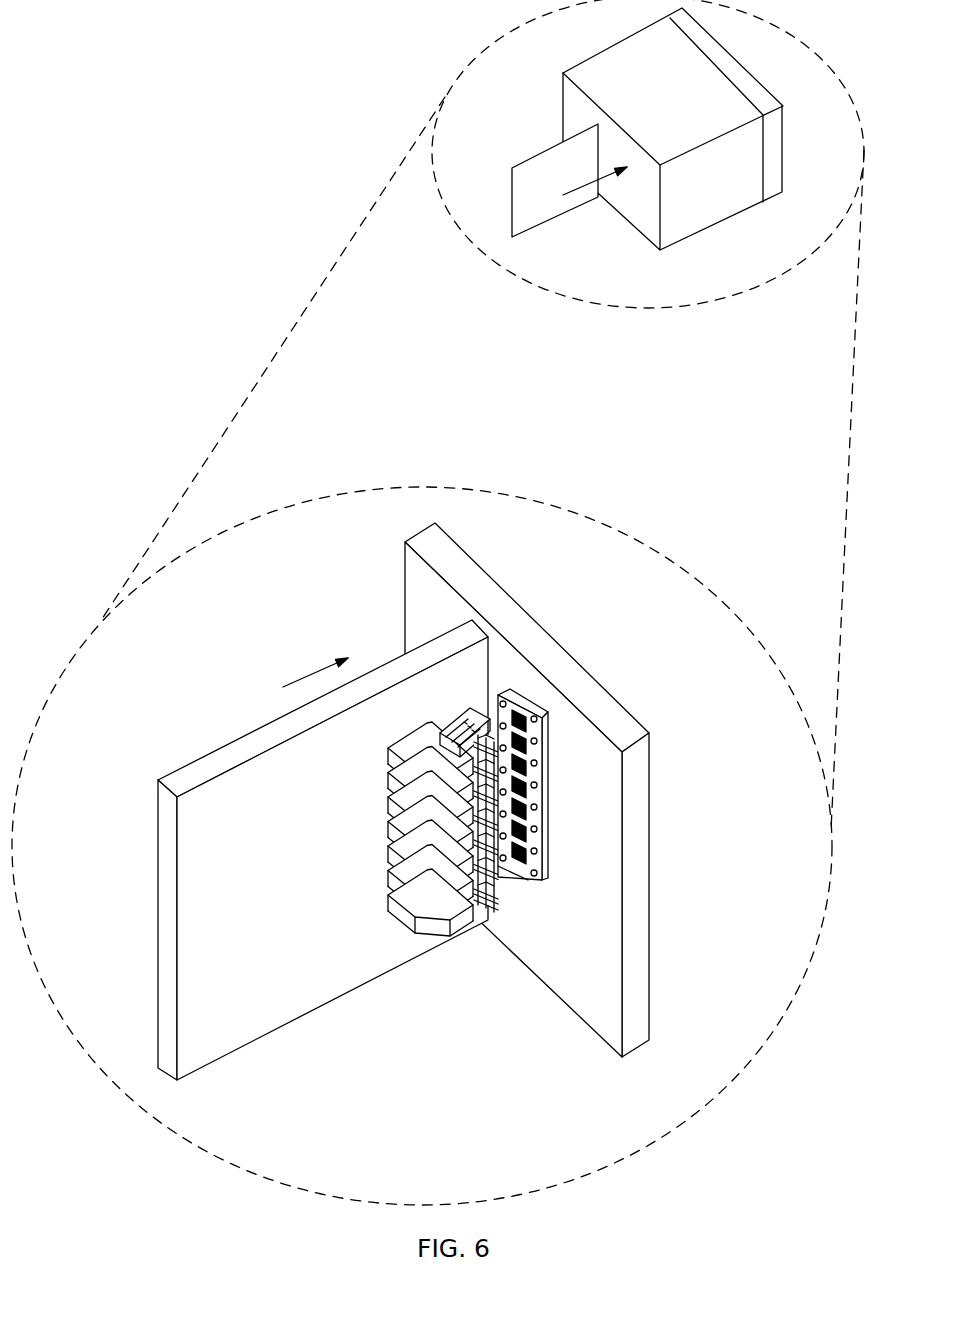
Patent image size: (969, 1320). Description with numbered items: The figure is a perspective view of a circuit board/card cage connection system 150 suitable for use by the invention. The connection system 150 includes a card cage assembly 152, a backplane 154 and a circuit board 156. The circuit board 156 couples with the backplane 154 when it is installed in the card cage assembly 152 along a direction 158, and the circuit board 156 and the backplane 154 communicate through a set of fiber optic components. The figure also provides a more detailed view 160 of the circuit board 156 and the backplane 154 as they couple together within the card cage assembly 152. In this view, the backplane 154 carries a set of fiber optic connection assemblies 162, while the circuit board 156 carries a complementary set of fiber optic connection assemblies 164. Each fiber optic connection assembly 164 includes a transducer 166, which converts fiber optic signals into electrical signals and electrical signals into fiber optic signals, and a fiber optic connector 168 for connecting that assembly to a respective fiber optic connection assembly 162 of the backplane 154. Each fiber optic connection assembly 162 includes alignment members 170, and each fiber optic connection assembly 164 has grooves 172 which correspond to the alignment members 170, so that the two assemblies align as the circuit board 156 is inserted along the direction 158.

The circuit board/card cage connection system 150 is at (743, 292).
The card cage assembly 152 is at (707, 230).
The backplane 154 is at (785, 182).
The circuit board 156 is at (512, 200).
The direction 158 is at (577, 187).
The more detailed view 160 is at (575, 511).
The fiber optic connection assembly 162 is at (543, 805).
The fiber optic connection assembly 164 is at (392, 728).
The transducer 166 is at (400, 803).
The fiber optic connector 168 is at (504, 908).
The alignment members 170 is at (542, 868).
The grooves 172 is at (510, 888).